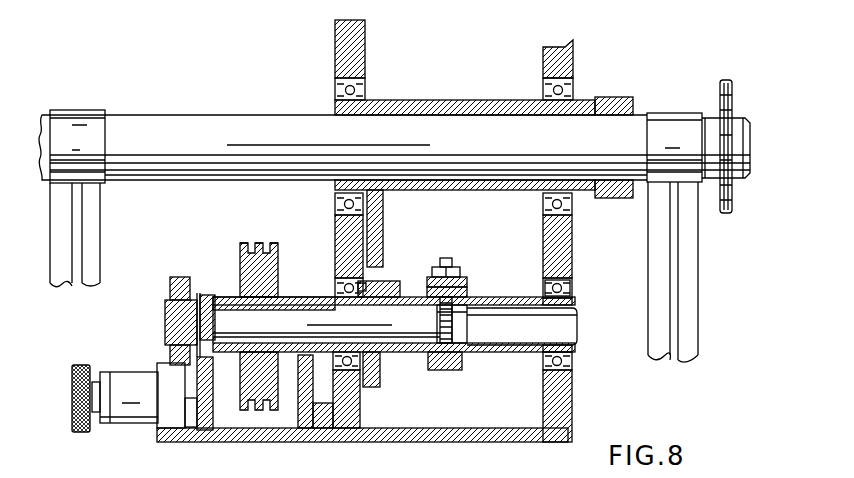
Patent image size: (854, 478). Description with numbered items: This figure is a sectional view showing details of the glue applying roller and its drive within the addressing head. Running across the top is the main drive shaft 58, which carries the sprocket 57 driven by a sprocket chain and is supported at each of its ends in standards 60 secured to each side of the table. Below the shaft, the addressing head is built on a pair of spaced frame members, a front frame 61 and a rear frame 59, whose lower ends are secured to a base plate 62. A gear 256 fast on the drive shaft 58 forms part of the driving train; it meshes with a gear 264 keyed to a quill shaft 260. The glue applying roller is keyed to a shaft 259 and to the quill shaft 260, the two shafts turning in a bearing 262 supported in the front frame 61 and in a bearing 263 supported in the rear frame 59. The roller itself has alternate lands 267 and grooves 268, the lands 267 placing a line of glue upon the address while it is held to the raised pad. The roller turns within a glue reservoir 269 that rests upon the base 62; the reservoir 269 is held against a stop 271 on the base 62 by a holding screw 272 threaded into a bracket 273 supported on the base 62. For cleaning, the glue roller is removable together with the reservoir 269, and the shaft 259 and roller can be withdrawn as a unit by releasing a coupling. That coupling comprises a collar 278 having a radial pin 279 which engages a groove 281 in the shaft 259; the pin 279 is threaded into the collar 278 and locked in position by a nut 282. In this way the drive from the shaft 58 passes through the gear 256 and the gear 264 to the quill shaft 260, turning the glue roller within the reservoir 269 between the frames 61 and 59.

The main drive shaft 58 is at (485, 152).
The standard 60 is at (102, 110).
The sprocket 57 is at (735, 200).
The front frame member 61 is at (337, 243).
The gear 256 is at (384, 228).
The gear 264 is at (383, 283).
The bearing 262 is at (366, 283).
The rear frame member 59 is at (571, 420).
The bearing 263 is at (573, 283).
The shaft 259 is at (288, 333).
The groove 268 is at (254, 243).
The land 267 is at (248, 243).
The quill shaft 260 is at (430, 280).
The nut 282 is at (462, 262).
The radial pin 279 is at (463, 283).
The collar 278 is at (466, 294).
The groove 281 is at (458, 327).
The glue reservoir 269 is at (214, 432).
The bracket 273 is at (172, 424).
The holding screw 272 is at (89, 432).
The stop 271 is at (335, 418).
The base plate 62 is at (297, 438).